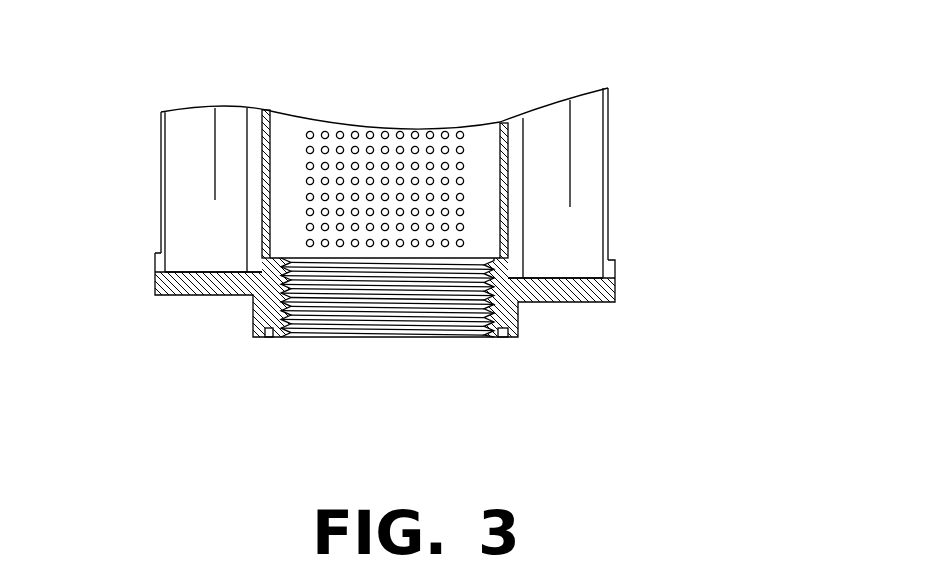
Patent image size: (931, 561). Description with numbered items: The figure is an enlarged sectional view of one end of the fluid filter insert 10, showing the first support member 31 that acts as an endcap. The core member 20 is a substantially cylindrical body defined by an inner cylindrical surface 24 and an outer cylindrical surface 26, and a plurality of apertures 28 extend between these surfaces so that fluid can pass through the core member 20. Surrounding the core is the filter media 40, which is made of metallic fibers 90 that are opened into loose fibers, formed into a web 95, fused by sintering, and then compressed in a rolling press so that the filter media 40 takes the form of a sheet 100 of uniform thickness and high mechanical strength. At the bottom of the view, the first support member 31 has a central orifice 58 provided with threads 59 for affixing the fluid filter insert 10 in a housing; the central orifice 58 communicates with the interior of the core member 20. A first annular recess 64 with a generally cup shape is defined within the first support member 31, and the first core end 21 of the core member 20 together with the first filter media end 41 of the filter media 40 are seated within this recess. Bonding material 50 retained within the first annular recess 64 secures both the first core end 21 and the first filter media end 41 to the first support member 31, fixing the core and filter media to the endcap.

The fluid filter insert 10 is at (694, 66).
The core member 20 is at (263, 110).
The first core end 21 is at (600, 243).
The inner cylindrical surface 24 is at (287, 120).
The outer cylindrical surface 26 is at (515, 120).
The apertures 28 is at (375, 128).
The first support member 31 is at (612, 297).
The filter media 40 is at (175, 178).
The first filter media end 41 is at (170, 194).
The bonding material 50 is at (555, 285).
The central orifice 58 is at (372, 312).
The threads 59 is at (495, 315).
The first annular recess 64 is at (212, 283).
The metallic fibers 90 is at (175, 222).
The web 95 is at (593, 211).
The sheet 100 is at (578, 183).